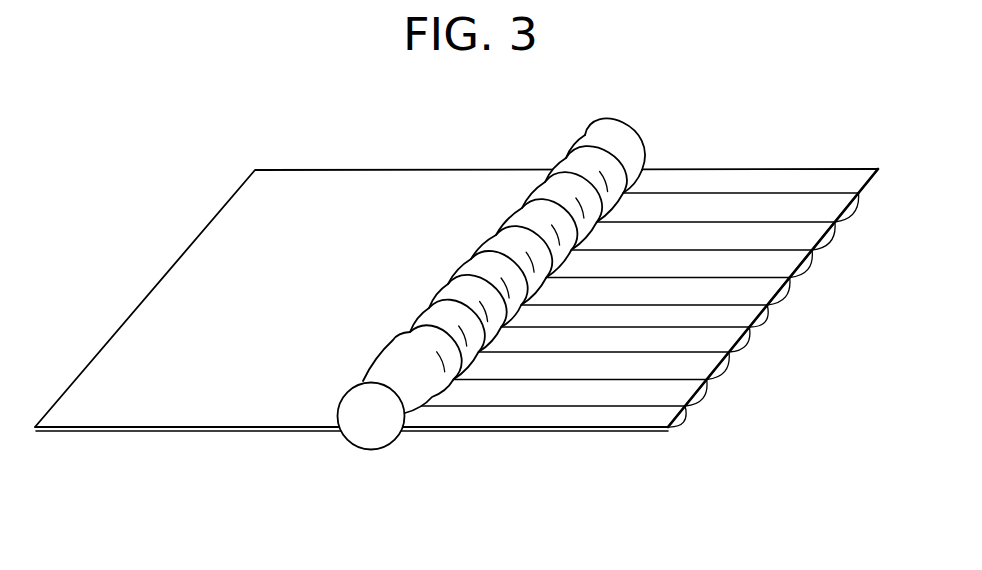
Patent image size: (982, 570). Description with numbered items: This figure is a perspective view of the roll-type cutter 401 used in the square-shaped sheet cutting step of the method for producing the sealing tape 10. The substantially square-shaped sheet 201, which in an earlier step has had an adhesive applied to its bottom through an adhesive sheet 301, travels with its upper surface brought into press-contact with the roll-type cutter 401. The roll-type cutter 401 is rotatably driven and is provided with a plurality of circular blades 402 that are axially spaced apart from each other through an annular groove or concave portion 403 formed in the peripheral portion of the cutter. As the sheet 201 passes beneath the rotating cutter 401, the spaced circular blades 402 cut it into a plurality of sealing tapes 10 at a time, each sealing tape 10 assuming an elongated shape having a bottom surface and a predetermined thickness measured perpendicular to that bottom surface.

The substantially square-shaped sheet 201 is at (353, 182).
The adhesive sheet 301 is at (222, 431).
The roll-type cutter 401 is at (377, 436).
The circular blades 402 is at (498, 232).
The annular groove or concave portion 403 is at (546, 193).
The sealing tape 10 is at (783, 205).